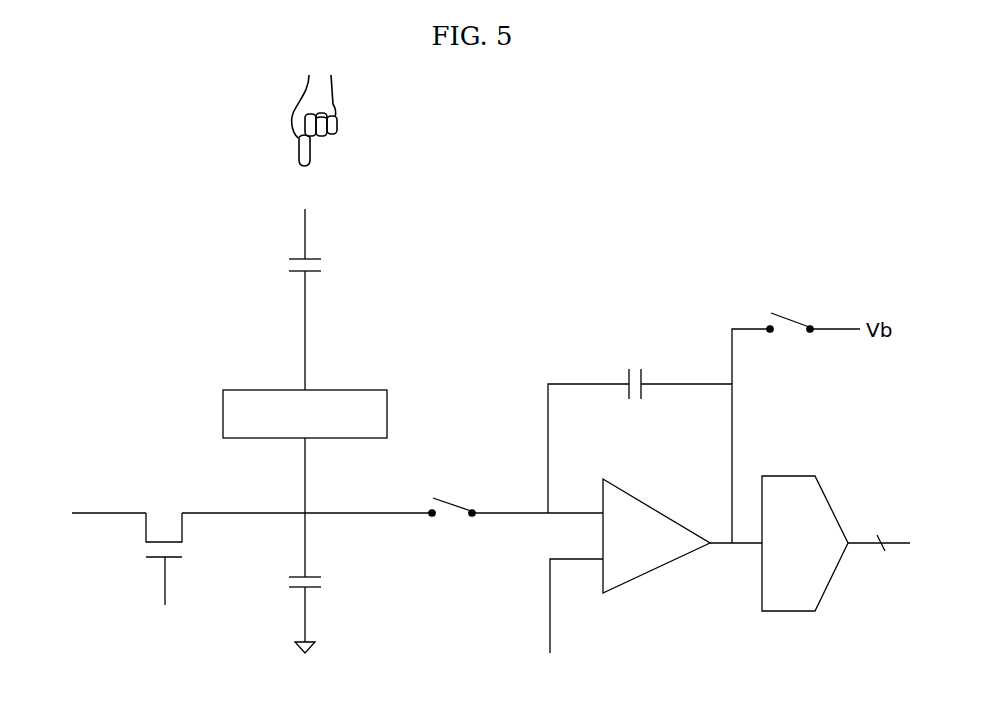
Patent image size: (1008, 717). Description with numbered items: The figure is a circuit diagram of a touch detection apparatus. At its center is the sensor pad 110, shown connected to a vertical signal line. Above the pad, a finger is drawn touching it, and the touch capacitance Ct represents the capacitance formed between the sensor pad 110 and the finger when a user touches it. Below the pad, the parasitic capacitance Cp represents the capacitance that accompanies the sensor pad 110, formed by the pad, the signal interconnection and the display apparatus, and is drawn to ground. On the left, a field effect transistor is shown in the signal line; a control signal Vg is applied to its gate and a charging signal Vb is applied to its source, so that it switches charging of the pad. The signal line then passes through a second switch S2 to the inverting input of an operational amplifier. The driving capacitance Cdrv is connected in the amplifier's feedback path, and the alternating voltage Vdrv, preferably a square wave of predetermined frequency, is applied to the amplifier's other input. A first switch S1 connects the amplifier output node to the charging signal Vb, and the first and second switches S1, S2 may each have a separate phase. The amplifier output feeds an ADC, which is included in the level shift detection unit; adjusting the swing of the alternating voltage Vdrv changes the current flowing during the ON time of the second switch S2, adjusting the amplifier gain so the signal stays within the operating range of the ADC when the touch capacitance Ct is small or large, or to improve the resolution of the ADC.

The sensor pad 110 is at (360, 389).
The touch capacitance Ct is at (320, 299).
The parasitic capacitance Cp is at (325, 612).
The driving capacitance Cdrv is at (640, 441).
The first switch S1 is at (796, 332).
The second switch S2 is at (452, 490).
The charging signal Vb is at (91, 515).
The control signal Vg is at (164, 574).
The alternating voltage Vdrv is at (565, 624).
The element ADC is at (836, 543).